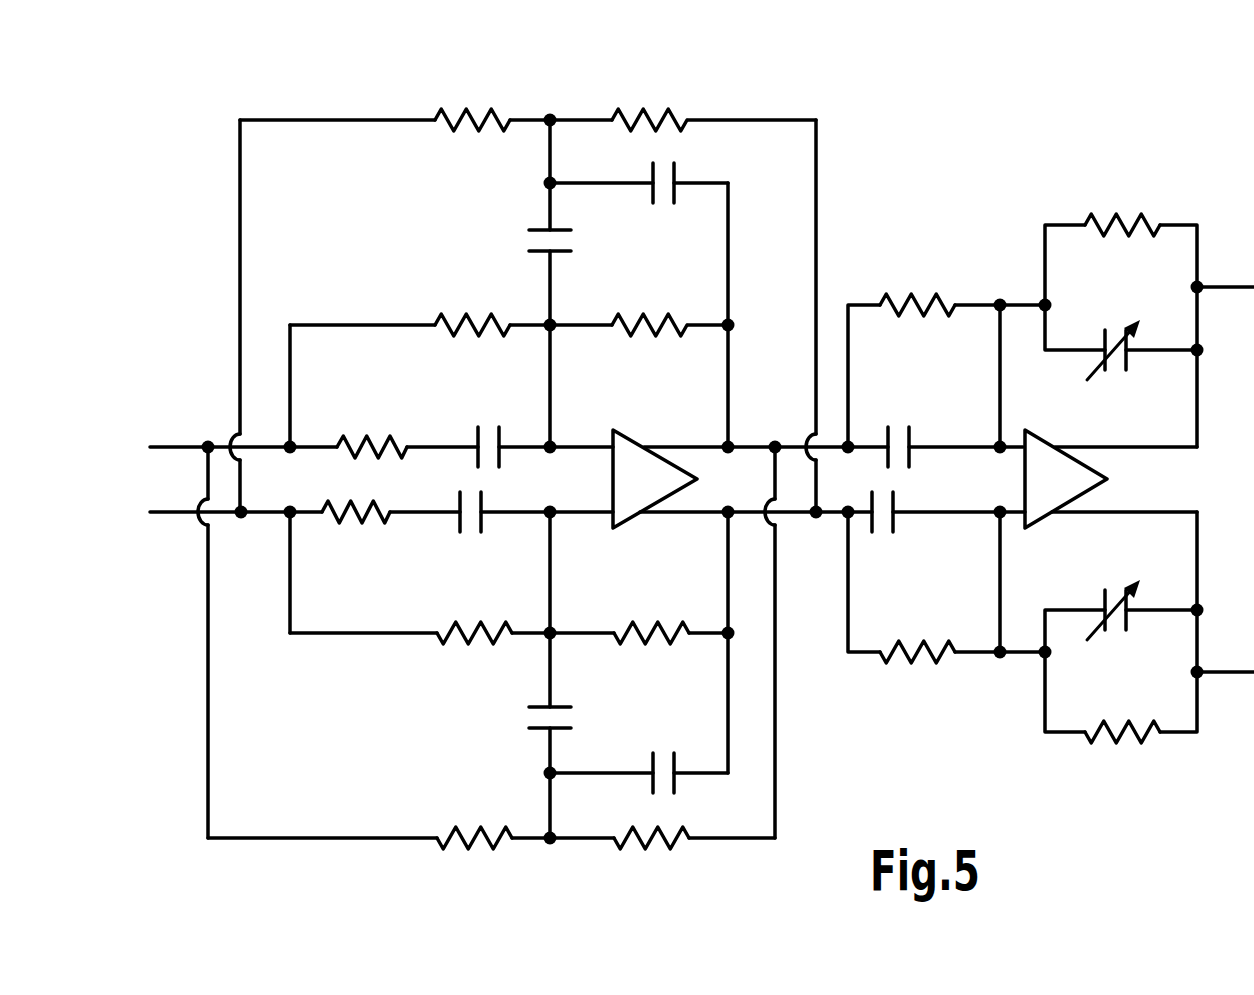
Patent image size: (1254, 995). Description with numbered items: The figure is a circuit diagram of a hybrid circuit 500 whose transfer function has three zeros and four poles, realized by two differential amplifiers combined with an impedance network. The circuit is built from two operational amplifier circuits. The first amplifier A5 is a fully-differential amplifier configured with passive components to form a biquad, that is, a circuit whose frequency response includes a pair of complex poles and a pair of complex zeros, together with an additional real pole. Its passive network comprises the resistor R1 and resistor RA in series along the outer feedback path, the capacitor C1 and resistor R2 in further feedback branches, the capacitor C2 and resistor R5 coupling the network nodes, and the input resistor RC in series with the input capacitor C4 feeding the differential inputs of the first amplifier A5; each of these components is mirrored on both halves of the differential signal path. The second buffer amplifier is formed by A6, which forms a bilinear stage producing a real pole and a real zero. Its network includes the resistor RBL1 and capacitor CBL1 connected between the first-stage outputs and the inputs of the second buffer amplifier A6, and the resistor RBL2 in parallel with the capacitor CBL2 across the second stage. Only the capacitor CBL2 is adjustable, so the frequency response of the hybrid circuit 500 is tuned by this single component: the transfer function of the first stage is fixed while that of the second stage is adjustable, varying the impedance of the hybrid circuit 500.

The hybrid circuit 500 is at (243, 70).
The resistor R1 is at (473, 487).
The resistor RA is at (650, 485).
The capacitor C1 is at (658, 478).
The capacitor C2 is at (526, 475).
The resistor R5 is at (473, 457).
The resistor R2 is at (650, 457).
The resistor RC is at (364, 480).
The capacitor C4 is at (473, 483).
The first amplifier A5 is at (655, 479).
The second buffer amplifier A6 is at (1066, 479).
The resistor RBL1 is at (918, 480).
The capacitor CBL1 is at (910, 477).
The resistor RBL2 is at (1122, 457).
The adjustable capacitor CBL2 is at (1106, 460).